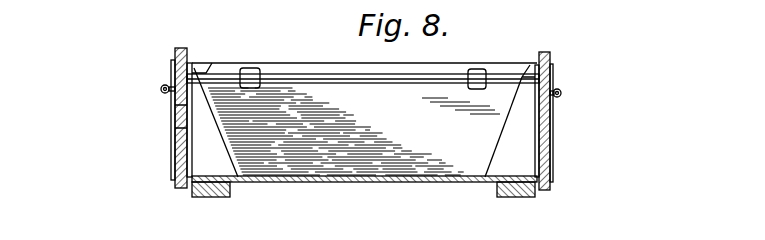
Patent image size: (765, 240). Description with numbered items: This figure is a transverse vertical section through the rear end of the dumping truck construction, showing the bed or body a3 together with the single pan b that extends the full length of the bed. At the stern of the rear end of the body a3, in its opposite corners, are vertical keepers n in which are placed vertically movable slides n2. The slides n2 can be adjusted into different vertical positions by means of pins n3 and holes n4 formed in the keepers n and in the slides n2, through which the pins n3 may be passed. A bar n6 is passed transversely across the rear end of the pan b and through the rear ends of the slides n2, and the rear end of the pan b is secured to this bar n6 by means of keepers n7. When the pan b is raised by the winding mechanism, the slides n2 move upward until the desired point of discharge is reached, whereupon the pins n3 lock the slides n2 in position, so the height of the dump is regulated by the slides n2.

The vertical keeper n is at (172, 158).
The vertically movable slide n2 is at (570, 50).
The pin n3 is at (586, 95).
The hole n4 is at (620, 118).
The bar n6 is at (300, 76).
The keeper n7 is at (252, 70).
The bed or body a3 is at (298, 205).
The pan b is at (354, 131).